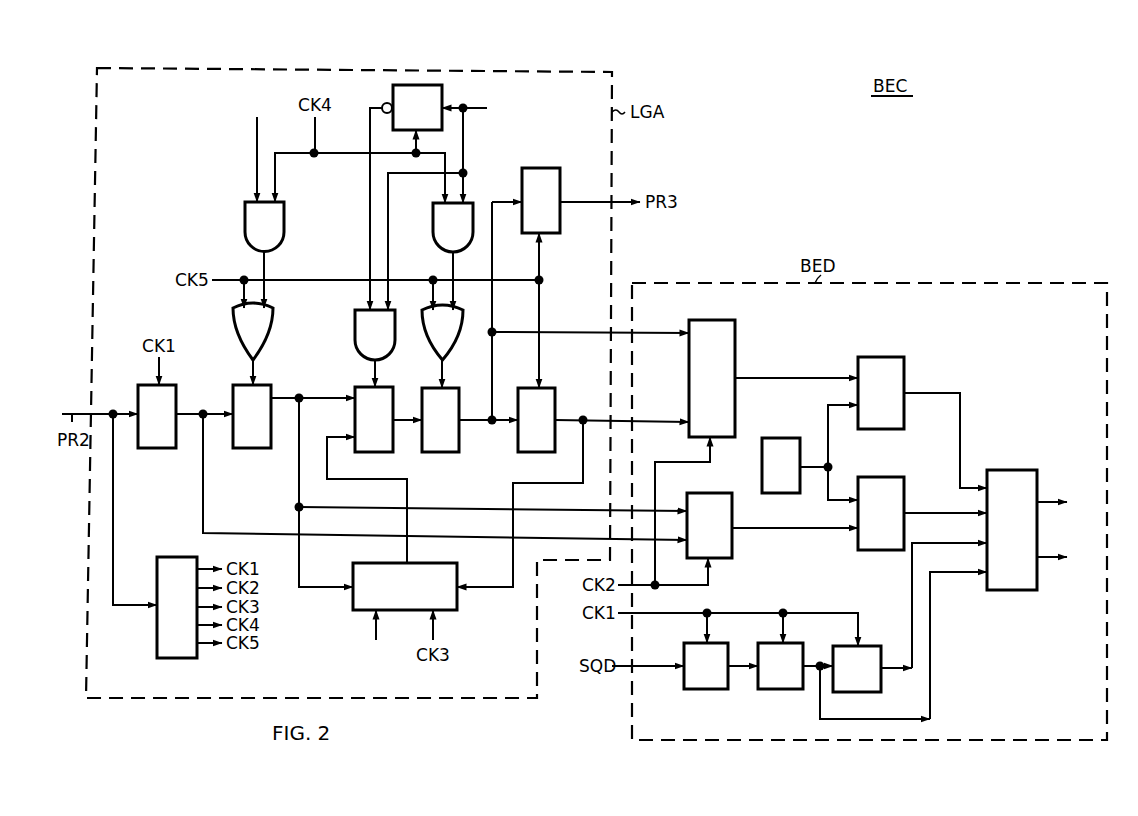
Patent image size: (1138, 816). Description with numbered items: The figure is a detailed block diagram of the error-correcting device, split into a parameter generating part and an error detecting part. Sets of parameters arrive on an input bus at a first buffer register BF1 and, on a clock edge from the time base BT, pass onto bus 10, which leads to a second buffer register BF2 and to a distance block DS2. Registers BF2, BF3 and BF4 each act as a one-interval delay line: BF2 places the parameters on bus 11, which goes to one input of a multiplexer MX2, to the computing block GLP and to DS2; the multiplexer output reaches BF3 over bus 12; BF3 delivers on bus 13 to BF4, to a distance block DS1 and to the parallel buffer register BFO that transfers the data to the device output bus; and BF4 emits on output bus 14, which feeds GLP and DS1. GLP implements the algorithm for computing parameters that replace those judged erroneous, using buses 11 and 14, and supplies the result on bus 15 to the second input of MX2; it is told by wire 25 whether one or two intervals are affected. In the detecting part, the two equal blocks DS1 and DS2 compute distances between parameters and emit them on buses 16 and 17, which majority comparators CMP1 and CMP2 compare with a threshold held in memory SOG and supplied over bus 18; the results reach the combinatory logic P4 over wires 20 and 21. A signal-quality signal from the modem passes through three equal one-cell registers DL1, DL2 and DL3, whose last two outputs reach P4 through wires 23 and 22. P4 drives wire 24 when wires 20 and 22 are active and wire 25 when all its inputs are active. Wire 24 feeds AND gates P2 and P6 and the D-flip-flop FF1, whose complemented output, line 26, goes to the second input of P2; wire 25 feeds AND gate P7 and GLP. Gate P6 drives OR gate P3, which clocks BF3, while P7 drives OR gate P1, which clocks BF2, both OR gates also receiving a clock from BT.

The bus 10 is at (203, 503).
The bus 11 is at (299, 489).
The bus 12 is at (402, 427).
The bus 13 is at (472, 427).
The output bus 14 is at (566, 419).
The bus 15 is at (407, 492).
The bus 16 is at (794, 374).
The bus 17 is at (785, 530).
The bus 18 is at (828, 452).
The wire 20 is at (960, 424).
The wire 21 is at (932, 508).
The wire 22 is at (912, 575).
The wire 23 is at (930, 610).
The wire 24 is at (768, 305).
The wire 25 is at (669, 380).
The inverted output line of flip-flop FF1 26 is at (370, 223).
The D-flip-flop FF1 is at (393, 87).
The parallel buffer register BFO is at (542, 168).
The buffer register BF1 is at (157, 448).
The buffer register BF2 is at (250, 448).
The buffer register BF3 is at (440, 452).
The buffer register BF4 is at (536, 452).
The multiplexer MX2 is at (374, 452).
The time-base BT is at (177, 557).
The computing circuit block GLP is at (457, 570).
The OR gate P1 is at (271, 336).
The AND gate P2 is at (355, 334).
The OR gate P3 is at (432, 358).
The AND gate P6 is at (433, 228).
The AND gate P7 is at (284, 226).
The distance computing circuit block DS1 is at (737, 338).
The distance computing circuit block DS2 is at (710, 493).
The memory SOG is at (782, 438).
The majority comparator CMP1 is at (880, 357).
The majority comparator CMP2 is at (885, 477).
The combinatory logic block P4 is at (1012, 470).
The 1-cell register DL1 is at (693, 689).
The 1-cell register DL2 is at (764, 689).
The 1-cell register DL3 is at (881, 686).